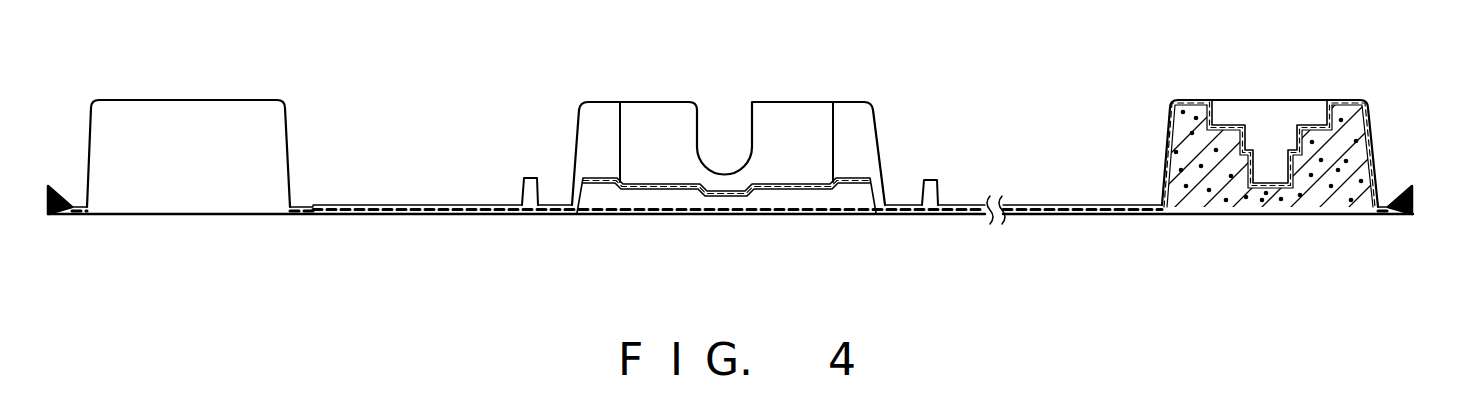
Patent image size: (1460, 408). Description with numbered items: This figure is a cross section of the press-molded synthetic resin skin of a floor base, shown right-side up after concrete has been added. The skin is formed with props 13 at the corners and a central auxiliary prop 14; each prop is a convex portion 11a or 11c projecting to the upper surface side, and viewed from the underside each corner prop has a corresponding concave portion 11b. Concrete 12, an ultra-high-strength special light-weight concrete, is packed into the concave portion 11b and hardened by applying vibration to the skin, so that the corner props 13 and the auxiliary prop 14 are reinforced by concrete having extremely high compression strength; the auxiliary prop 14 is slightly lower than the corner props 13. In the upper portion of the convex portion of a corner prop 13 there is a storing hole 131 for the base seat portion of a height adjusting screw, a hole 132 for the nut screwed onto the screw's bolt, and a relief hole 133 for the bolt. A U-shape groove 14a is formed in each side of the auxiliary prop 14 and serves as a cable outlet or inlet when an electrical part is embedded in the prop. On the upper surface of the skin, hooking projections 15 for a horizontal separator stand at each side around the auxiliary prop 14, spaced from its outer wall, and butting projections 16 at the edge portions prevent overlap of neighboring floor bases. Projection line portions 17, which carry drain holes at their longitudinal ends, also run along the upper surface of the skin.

The convex portion 11a is at (1371, 118).
The concave portion 11b is at (1322, 135).
The convex portion 11c is at (884, 112).
The concrete 12 is at (1300, 198).
The prop 13 is at (773, 165).
The storing hole 131 is at (1233, 115).
The hole 132 is at (1285, 137).
The relief hole 133 is at (1267, 168).
The auxiliary prop 14 is at (728, 134).
The U-shape groove 14a is at (580, 137).
The hooking projection 15 is at (522, 186).
The butting projection 16 is at (68, 190).
The projection line portion 17 is at (415, 204).